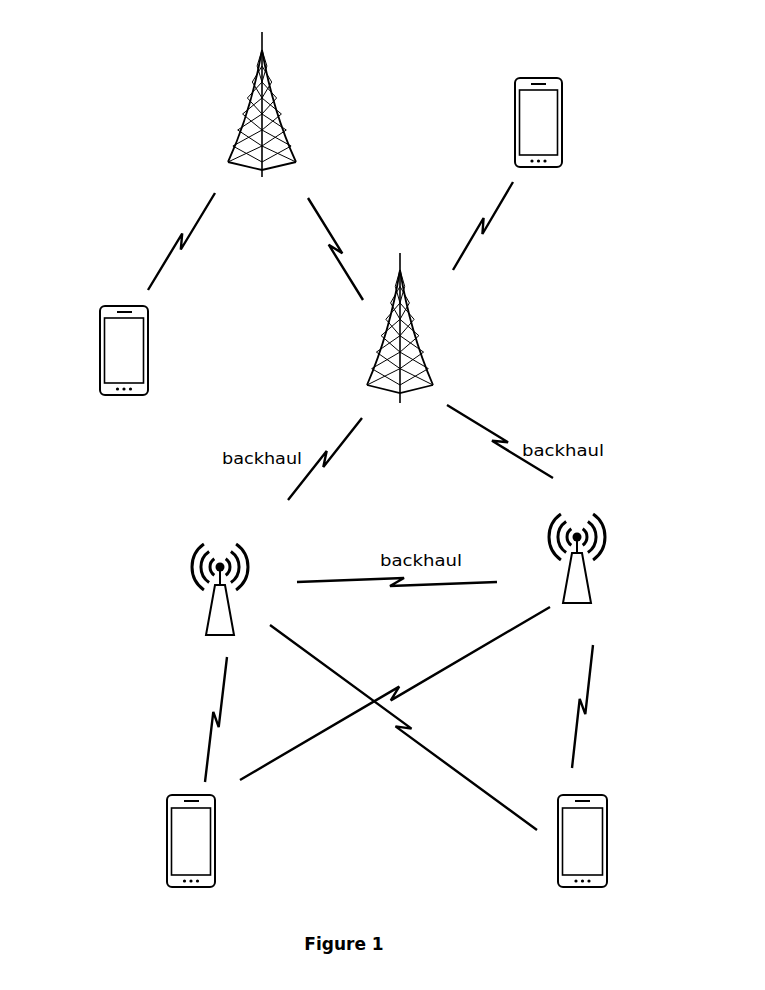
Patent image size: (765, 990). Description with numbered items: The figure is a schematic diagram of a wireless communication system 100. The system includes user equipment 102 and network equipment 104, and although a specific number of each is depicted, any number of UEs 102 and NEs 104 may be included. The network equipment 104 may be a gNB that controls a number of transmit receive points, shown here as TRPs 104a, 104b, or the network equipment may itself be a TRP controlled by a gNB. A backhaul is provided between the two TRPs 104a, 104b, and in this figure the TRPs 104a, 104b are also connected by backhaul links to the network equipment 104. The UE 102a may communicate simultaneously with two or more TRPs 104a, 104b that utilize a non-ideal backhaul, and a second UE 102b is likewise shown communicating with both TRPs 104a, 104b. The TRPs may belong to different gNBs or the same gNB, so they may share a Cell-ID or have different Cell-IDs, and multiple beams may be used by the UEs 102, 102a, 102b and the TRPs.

The wireless communication system 100 is at (131, 51).
The user equipment 102 is at (329, 236).
The user equipment 102a is at (158, 841).
The user equipment 102b is at (610, 841).
The network equipment 104 is at (250, 108).
The transmit receive point 104a is at (190, 589).
The transmit receive point 104b is at (606, 558).